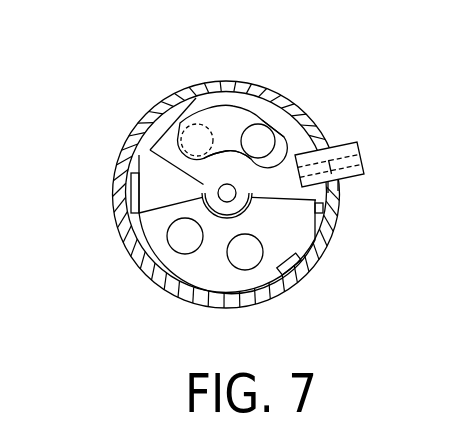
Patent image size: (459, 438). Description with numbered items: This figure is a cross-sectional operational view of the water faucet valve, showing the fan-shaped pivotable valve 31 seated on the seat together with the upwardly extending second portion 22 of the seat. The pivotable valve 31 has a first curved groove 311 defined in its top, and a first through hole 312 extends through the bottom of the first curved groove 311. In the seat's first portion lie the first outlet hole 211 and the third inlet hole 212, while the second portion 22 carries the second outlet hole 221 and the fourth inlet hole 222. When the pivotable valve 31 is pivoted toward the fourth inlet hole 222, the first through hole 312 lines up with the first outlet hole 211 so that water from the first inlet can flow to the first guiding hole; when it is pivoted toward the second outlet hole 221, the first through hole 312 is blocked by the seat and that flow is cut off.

The second portion 22 is at (302, 228).
The second outlet hole 221 is at (177, 236).
The fourth inlet hole 222 is at (243, 253).
The pivotable valve 31 is at (297, 133).
The first curved groove 311 is at (228, 125).
The first through hole 312 is at (295, 130).
The third inlet hole 212 is at (197, 123).
The first outlet hole 211 is at (253, 130).